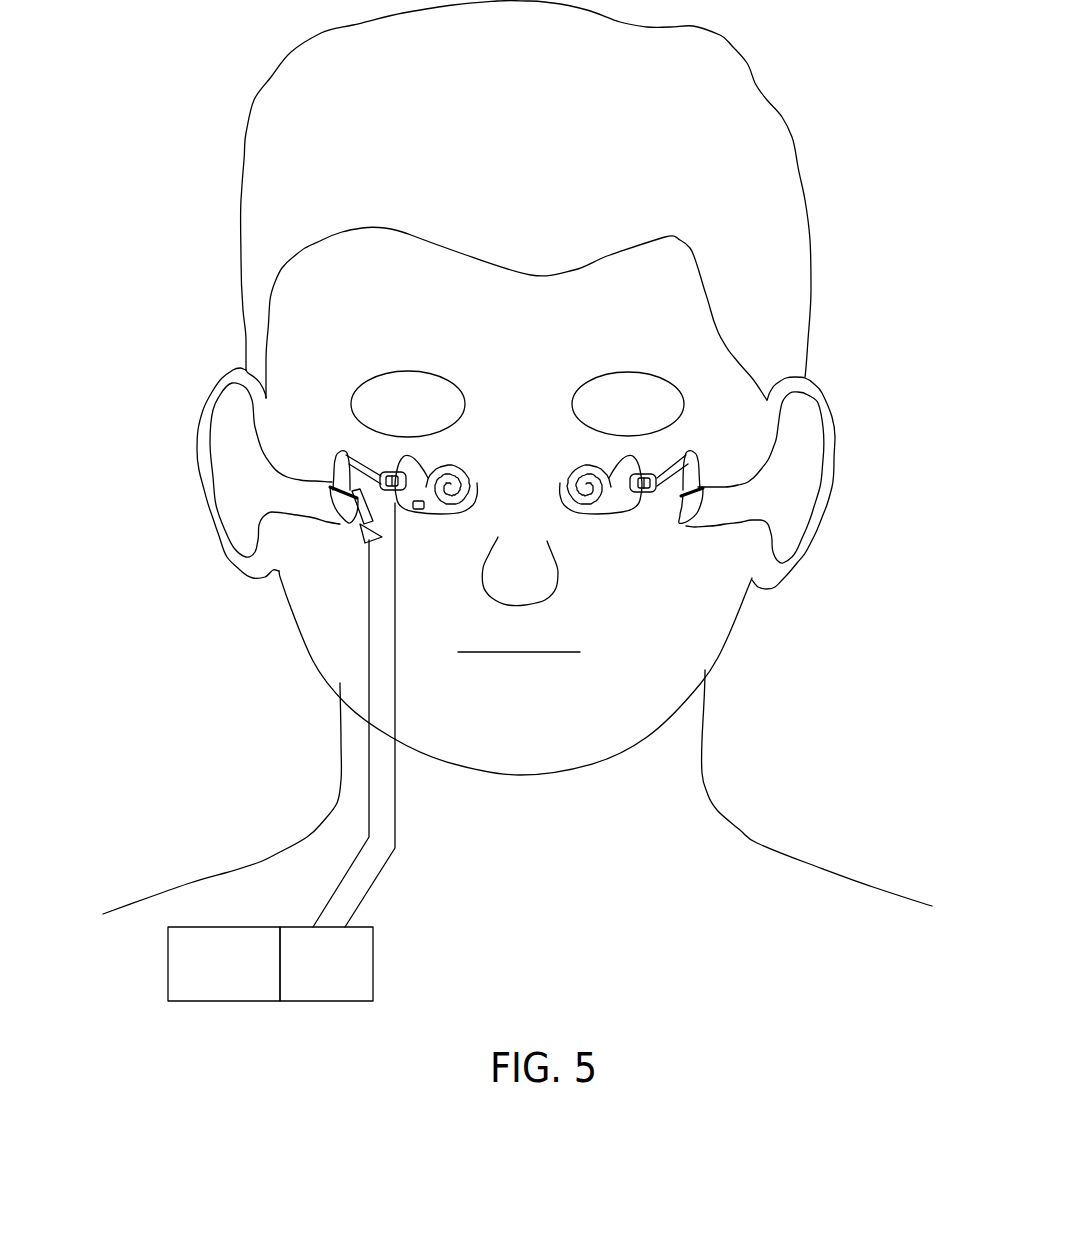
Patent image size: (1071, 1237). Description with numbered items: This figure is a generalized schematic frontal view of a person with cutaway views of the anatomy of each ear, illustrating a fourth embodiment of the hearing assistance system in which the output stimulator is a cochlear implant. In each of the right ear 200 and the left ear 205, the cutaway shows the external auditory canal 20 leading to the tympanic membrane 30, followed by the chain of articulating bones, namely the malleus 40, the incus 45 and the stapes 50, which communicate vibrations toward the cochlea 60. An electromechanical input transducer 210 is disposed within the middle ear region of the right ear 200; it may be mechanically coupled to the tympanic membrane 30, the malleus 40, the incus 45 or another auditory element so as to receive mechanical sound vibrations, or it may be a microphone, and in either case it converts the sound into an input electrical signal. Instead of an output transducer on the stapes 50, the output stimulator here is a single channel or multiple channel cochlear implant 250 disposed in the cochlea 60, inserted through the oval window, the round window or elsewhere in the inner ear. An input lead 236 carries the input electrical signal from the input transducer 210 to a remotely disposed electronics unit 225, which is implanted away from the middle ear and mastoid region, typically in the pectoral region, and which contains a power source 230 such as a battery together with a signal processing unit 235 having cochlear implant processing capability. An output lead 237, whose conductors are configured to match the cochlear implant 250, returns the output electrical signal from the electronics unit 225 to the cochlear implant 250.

The external auditory canal 20 is at (524, 452).
The tympanic membrane 30 is at (342, 508).
The malleus 40 is at (331, 470).
The incus 45 is at (352, 453).
The stapes 50 is at (383, 473).
The cochlea 60 is at (472, 470).
The right ear 200 is at (202, 375).
The left ear 205 is at (836, 390).
The electromechanical input transducer 210 is at (360, 535).
The electronics unit 225 is at (324, 984).
The power source 230 is at (235, 1001).
The signal processing unit 235 is at (328, 1001).
The input lead 236 is at (338, 882).
The output lead 237 is at (375, 883).
The cochlear implant 250 is at (428, 508).